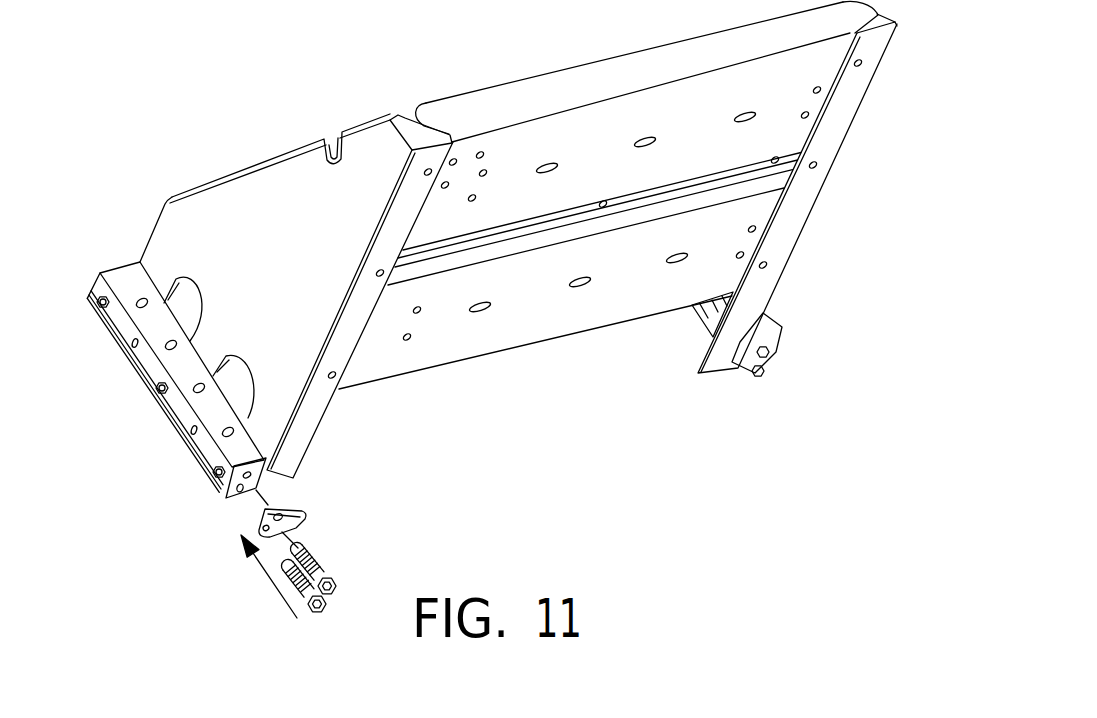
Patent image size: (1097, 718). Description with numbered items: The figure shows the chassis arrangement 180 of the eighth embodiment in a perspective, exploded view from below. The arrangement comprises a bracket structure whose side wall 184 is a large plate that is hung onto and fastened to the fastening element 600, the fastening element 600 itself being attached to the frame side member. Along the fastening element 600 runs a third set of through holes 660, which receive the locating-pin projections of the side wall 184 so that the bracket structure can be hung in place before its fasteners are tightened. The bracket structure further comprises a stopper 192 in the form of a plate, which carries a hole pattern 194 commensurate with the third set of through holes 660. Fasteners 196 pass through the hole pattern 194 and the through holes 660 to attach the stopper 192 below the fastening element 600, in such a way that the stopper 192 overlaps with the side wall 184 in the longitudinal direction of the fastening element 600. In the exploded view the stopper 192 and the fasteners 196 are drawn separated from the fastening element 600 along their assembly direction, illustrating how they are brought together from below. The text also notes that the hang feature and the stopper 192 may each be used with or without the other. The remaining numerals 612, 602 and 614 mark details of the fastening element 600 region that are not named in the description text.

The chassis arrangement 180 is at (530, 417).
The side wall 184 is at (251, 223).
The fastening element 600 is at (155, 372).
The bracket body 612 is at (119, 283).
The clamp rail with bolts 602 is at (182, 415).
The end plate 614 is at (233, 500).
The third set of through holes 660 is at (237, 514).
The stopper 192 is at (328, 496).
The hole pattern 194 is at (281, 512).
The fasteners 196 is at (322, 556).